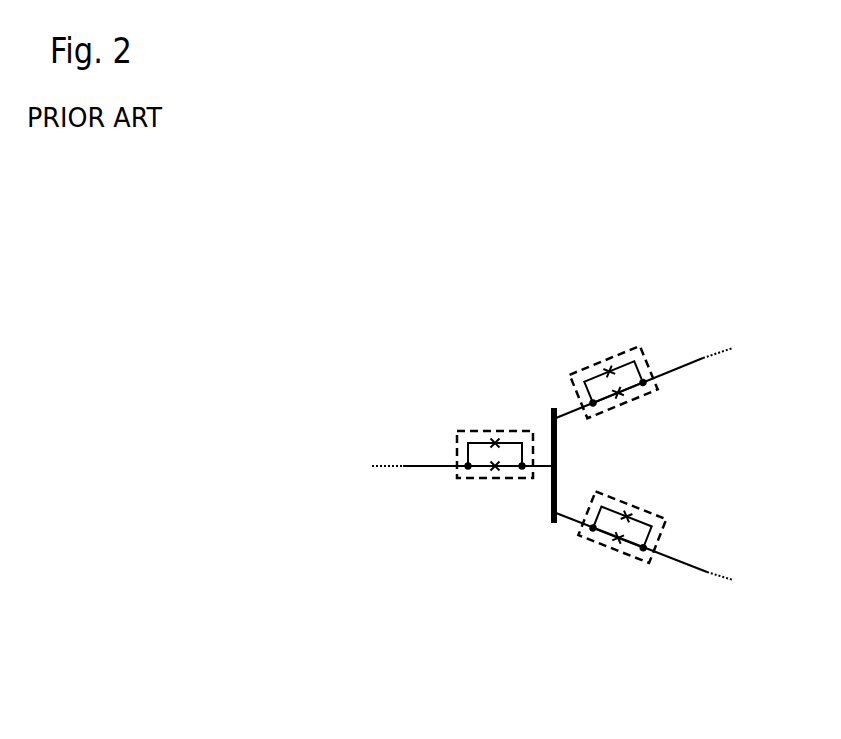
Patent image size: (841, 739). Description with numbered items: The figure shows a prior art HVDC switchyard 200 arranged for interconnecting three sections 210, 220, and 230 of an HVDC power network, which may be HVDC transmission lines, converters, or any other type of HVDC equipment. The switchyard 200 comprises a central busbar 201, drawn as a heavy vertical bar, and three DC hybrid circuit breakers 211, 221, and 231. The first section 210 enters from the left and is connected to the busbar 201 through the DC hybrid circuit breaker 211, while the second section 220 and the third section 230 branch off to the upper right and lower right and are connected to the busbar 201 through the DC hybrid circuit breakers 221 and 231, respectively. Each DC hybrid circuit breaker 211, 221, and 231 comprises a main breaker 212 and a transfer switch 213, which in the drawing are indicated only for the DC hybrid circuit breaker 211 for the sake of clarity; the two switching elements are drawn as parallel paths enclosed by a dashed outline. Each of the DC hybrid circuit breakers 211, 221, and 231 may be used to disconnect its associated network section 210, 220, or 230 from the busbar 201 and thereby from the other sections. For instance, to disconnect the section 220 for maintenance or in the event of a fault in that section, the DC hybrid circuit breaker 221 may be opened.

The switchyard 200 is at (417, 690).
The busbar 201 is at (548, 503).
The section 210 is at (433, 471).
The DC hybrid circuit breaker 211 is at (496, 435).
The main breaker 212 is at (488, 441).
The transfer switch 213 is at (488, 470).
The section 220 is at (674, 372).
The DC hybrid circuit breaker 221 is at (614, 394).
The section 230 is at (674, 559).
The DC hybrid circuit breaker 231 is at (622, 514).